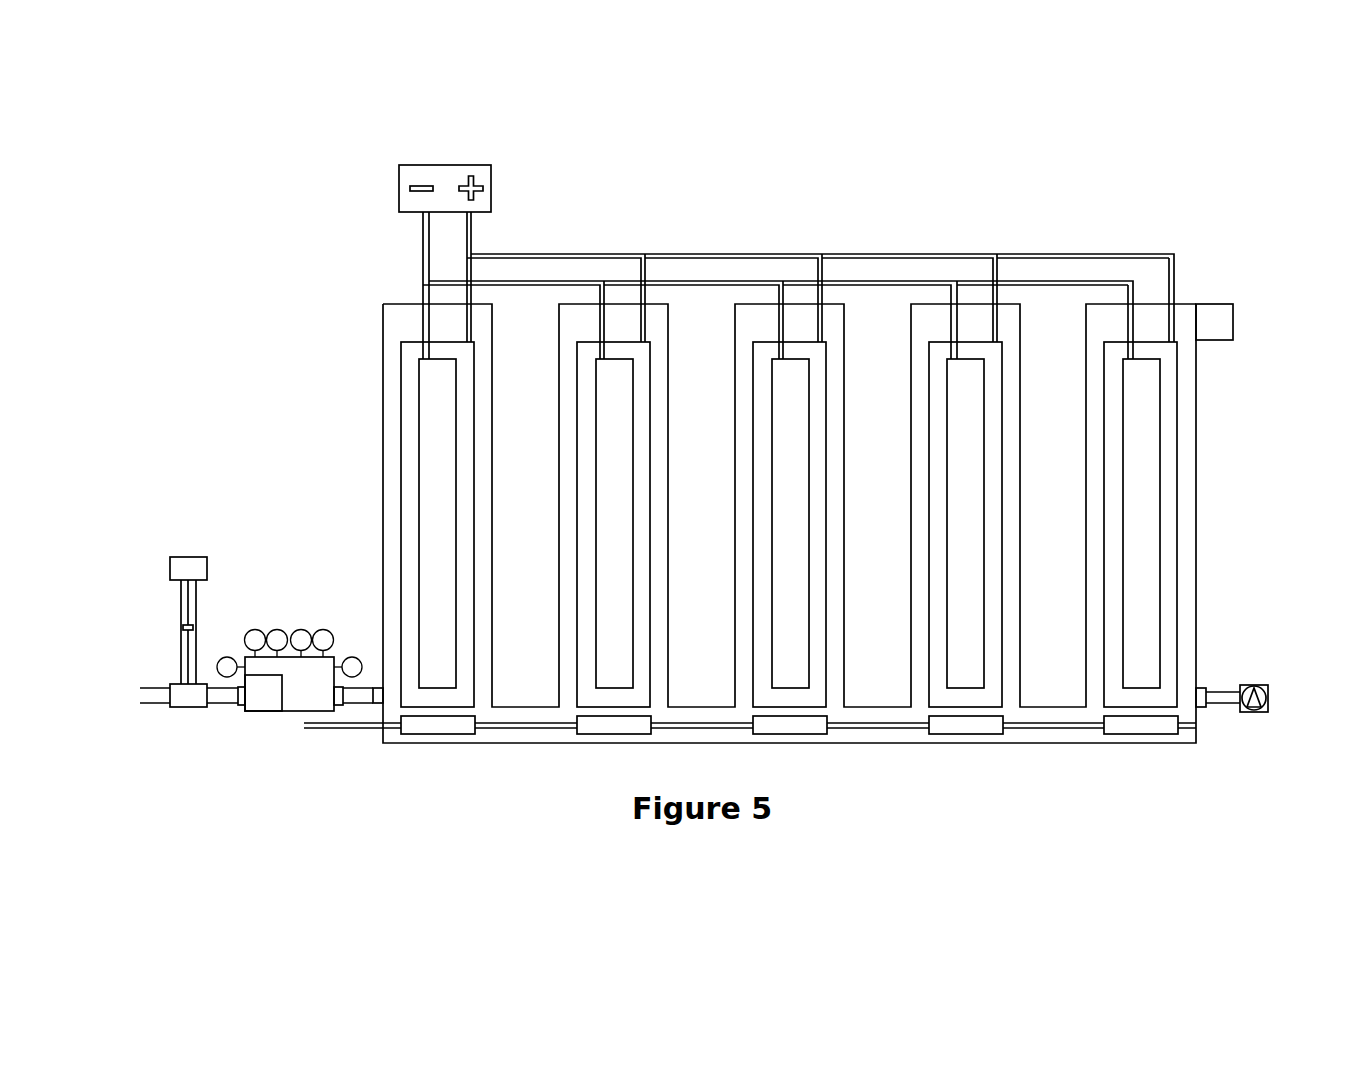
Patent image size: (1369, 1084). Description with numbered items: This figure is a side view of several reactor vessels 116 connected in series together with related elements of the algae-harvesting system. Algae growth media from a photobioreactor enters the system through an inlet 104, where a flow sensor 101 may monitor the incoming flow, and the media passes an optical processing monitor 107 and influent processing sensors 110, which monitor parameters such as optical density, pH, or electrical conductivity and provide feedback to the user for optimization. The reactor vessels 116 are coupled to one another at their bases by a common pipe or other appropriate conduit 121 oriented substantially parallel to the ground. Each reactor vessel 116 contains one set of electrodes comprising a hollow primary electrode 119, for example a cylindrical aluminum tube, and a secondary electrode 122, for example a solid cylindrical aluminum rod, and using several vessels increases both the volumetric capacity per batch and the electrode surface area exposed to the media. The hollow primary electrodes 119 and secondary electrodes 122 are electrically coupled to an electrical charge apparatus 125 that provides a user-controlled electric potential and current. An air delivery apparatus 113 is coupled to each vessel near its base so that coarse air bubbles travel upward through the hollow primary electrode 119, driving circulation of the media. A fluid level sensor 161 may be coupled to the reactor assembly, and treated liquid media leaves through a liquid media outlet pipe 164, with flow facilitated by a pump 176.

The flow sensor 101 is at (189, 567).
The inlet 104 is at (156, 696).
The optical processing monitor 107 is at (264, 695).
The influent processing sensors 110 is at (311, 685).
The air delivery apparatus 113 is at (438, 725).
The reactor vessel 116 is at (393, 376).
The hollow primary electrode 119 is at (413, 414).
The common pipe or other appropriate conduit 121 is at (533, 734).
The secondary electrode 122 is at (440, 483).
The electrical charge apparatus 125 is at (482, 199).
The fluid level sensor 161 is at (1217, 327).
The liquid media outlet pipe 164 is at (1225, 698).
The pump 176 is at (1263, 697).